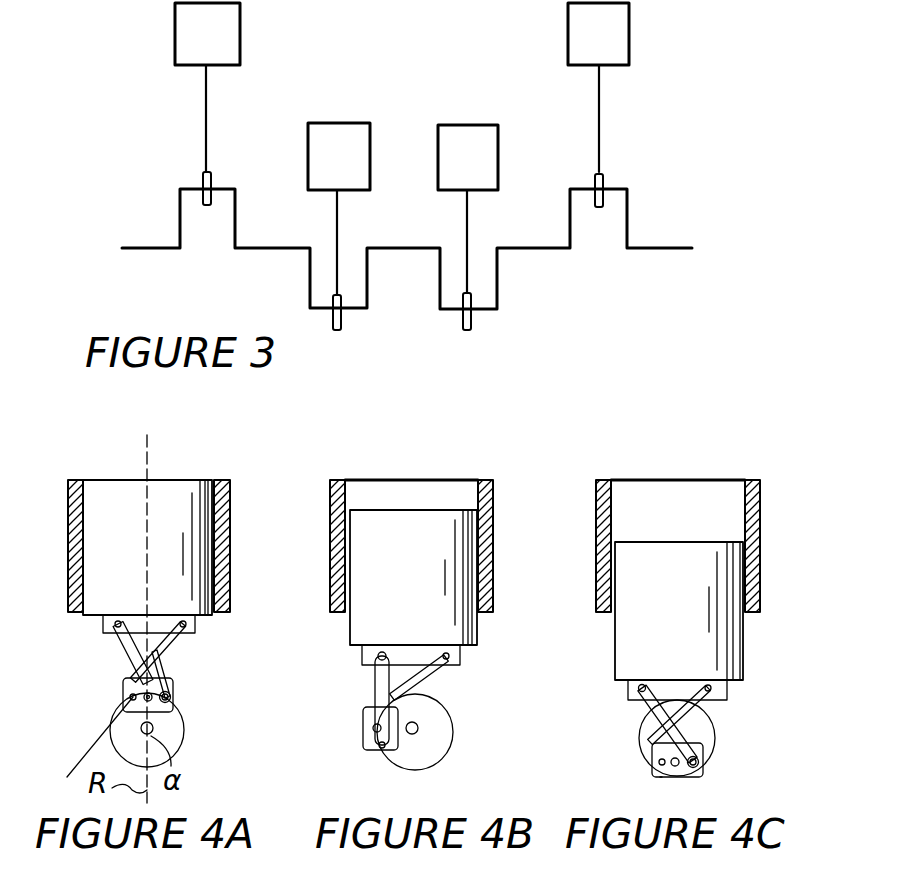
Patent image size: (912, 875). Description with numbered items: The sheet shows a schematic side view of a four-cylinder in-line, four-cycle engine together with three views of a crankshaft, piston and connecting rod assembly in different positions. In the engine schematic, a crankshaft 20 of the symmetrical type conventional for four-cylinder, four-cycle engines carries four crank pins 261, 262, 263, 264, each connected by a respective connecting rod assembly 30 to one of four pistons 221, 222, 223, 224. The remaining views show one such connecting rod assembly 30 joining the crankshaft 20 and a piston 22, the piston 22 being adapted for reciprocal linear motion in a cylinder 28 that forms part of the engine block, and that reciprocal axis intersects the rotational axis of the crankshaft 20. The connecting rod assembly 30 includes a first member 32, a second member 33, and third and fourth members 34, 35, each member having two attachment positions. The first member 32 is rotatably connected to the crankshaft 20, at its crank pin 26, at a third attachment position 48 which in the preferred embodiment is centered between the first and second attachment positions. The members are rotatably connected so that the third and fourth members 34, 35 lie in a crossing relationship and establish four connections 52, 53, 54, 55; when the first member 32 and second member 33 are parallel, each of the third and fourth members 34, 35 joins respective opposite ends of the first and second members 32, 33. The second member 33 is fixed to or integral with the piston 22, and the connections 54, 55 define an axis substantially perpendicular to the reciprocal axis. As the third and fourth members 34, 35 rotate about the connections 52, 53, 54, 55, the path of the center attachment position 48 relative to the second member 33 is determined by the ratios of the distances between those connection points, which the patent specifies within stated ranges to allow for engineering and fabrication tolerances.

In FIG. 3, the crankshaft 20 is at (665, 250).
In FIG. 4A, the crankshaft 20 is at (176, 740).
In FIG. 4B, the crankshaft 20 is at (440, 736).
In FIG. 4C, the crankshaft 20 is at (705, 736).
In FIG. 3, the piston 22 is at (451, 96).
In FIG. 4A, the piston 22 is at (163, 490).
In FIG. 4B, the piston 22 is at (458, 555).
In FIG. 4C, the piston 22 is at (713, 562).
In FIG. 3, the first piston 221 is at (228, 45).
In FIG. 3, the second piston 222 is at (343, 130).
In FIG. 3, the third piston 223 is at (478, 130).
In FIG. 3, the fourth piston 224 is at (622, 27).
In FIG. 3, the crank pin 26 is at (393, 244).
In FIG. 4C, the crank pin 26 is at (662, 776).
In FIG. 3, the first crank pin 261 is at (200, 185).
In FIG. 3, the second crank pin 262 is at (345, 312).
In FIG. 3, the third crank pin 263 is at (478, 312).
In FIG. 3, the fourth crank pin 264 is at (608, 195).
In FIG. 4A, the cylinder 28 is at (225, 480).
In FIG. 4B, the cylinder 28 is at (488, 480).
In FIG. 4C, the cylinder 28 is at (752, 480).
In FIG. 3, the connecting rod assembly 30 is at (601, 110).
In FIG. 4A, the connecting rod assembly 30 is at (148, 664).
In FIG. 4A, the first member 32 is at (170, 702).
In FIG. 4B, the first member 32 is at (363, 735).
In FIG. 4C, the first member 32 is at (697, 777).
In FIG. 4A, the second member 33 is at (185, 634).
In FIG. 4B, the second member 33 is at (458, 660).
In FIG. 4C, the second member 33 is at (730, 688).
In FIG. 4A, the third member 34 is at (135, 658).
In FIG. 4B, the third member 34 is at (373, 682).
In FIG. 4C, the third member 34 is at (650, 714).
In FIG. 4A, the fourth member 35 is at (168, 670).
In FIG. 4B, the fourth member 35 is at (432, 672).
In FIG. 4C, the fourth member 35 is at (692, 720).
In FIG. 4A, the third attachment position 48 is at (76, 745).
In FIG. 4A, the connection 52 is at (130, 697).
In FIG. 4C, the connection 52 is at (658, 762).
In FIG. 4A, the connection 53 is at (170, 697).
In FIG. 4C, the connection 53 is at (700, 762).
In FIG. 4A, the connection 54 is at (110, 627).
In FIG. 4C, the connection 54 is at (633, 688).
In FIG. 4A, the connection 55 is at (190, 625).
In FIG. 4C, the connection 55 is at (714, 692).